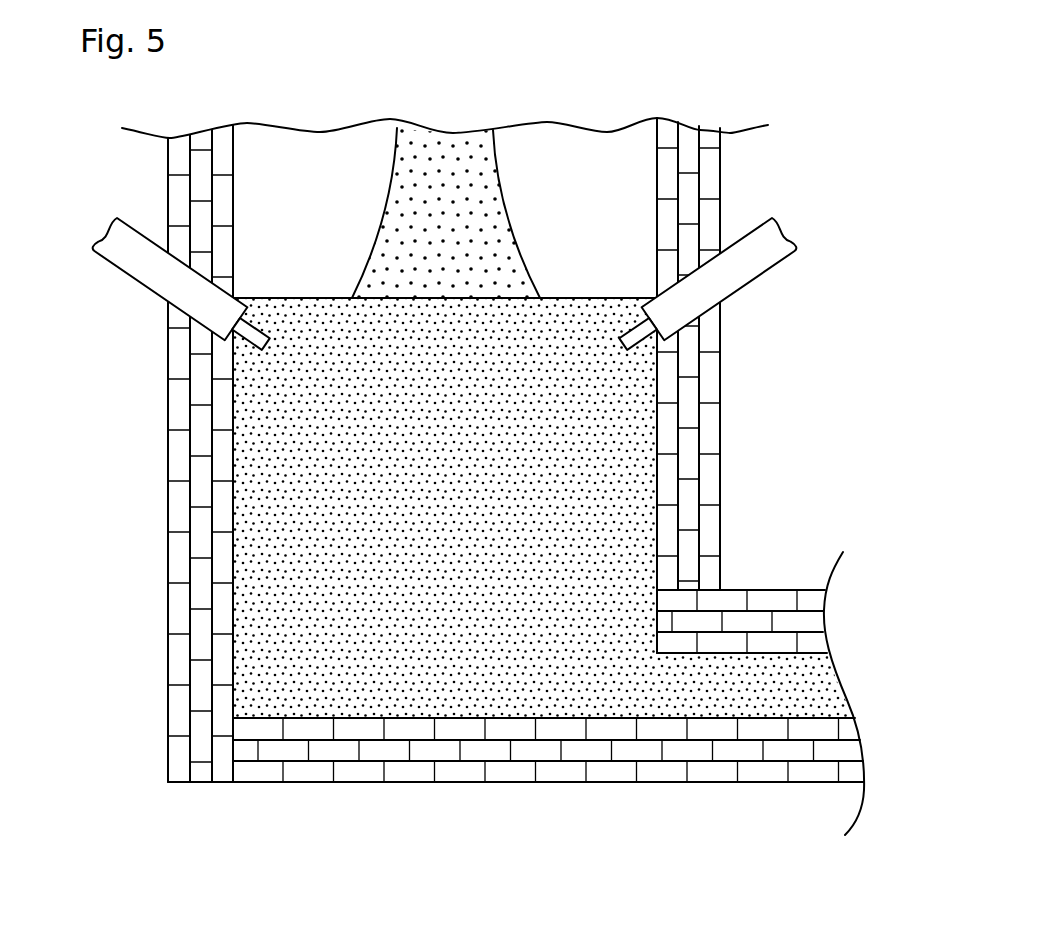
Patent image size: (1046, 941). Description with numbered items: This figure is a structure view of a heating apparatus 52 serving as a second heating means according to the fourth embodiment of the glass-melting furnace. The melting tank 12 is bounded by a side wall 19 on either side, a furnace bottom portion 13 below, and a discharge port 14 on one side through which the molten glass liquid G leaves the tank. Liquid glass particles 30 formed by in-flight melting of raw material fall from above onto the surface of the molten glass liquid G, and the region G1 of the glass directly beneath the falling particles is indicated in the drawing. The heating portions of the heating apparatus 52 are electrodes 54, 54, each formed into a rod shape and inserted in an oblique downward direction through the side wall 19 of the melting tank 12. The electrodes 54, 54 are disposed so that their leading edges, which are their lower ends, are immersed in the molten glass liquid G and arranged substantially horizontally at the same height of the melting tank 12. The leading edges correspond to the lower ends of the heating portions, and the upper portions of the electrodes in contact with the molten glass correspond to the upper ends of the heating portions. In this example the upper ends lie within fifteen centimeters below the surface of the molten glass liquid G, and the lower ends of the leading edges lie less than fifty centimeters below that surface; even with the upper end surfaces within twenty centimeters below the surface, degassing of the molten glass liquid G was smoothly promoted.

The melting tank 12 is at (724, 163).
The furnace bottom portion 13 is at (502, 773).
The discharge port 14 is at (762, 603).
The side wall 19 is at (690, 335).
The liquid glass particles 30 is at (400, 207).
The heating apparatus 52 is at (754, 276).
The electrode 54 is at (250, 332).
The molten glass liquid G is at (418, 688).
The molten glass beneath batch G1 is at (393, 313).